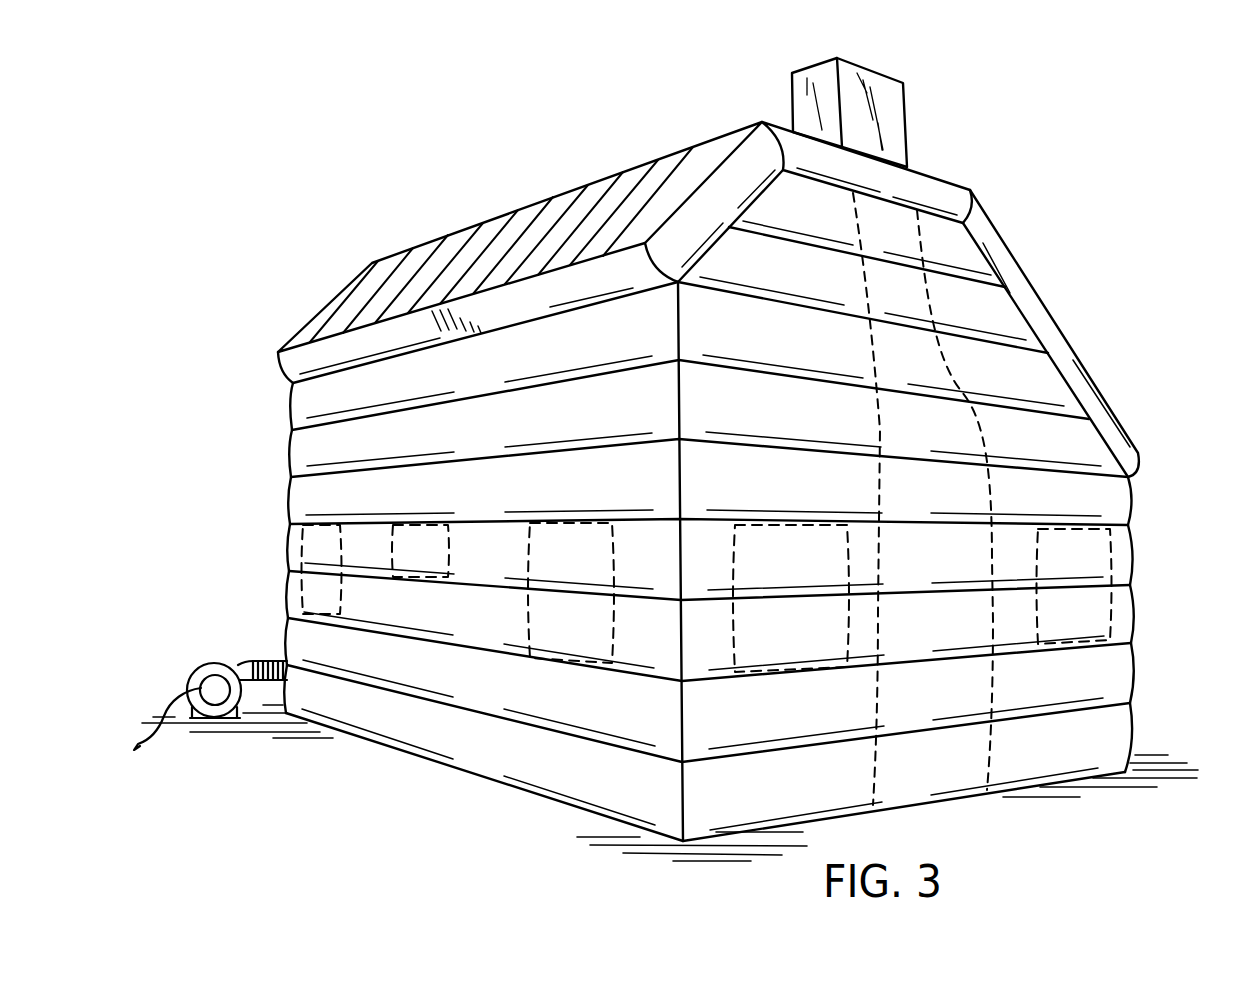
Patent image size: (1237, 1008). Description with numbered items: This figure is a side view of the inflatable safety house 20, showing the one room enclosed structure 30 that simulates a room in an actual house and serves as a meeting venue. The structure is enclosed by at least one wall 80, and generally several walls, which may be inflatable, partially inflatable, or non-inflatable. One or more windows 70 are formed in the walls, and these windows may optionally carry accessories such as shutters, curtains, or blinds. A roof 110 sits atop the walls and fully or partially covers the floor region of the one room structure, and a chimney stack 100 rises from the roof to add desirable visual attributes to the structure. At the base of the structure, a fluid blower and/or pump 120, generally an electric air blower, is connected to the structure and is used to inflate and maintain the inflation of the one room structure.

The inflatable safety house 20 is at (647, 120).
The one room enclosed structure 30 is at (509, 216).
The roof 110 is at (580, 200).
The wall 80 is at (998, 320).
The window 70 is at (310, 548).
The chimney stack 100 is at (892, 120).
The fluid blower and/or pump 120 is at (208, 660).